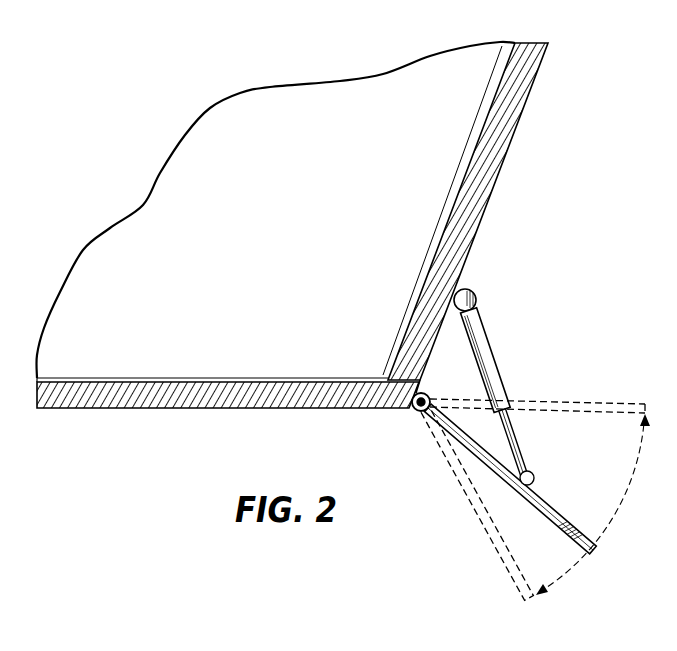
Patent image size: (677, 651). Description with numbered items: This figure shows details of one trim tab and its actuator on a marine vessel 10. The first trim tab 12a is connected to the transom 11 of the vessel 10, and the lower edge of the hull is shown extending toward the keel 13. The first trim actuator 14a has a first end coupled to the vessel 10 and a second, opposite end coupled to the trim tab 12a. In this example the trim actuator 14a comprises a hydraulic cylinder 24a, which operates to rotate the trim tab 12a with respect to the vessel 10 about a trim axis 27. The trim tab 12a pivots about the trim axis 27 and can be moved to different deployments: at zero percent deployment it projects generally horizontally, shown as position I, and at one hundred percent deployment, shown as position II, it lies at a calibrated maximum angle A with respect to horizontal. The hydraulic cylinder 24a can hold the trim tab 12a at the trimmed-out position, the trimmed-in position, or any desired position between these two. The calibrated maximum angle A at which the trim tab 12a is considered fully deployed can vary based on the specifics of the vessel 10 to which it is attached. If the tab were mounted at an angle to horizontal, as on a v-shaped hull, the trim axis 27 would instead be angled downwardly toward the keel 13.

The marine vessel 10 is at (160, 173).
The transom 11 is at (508, 152).
The keel 13 is at (115, 408).
The first trim actuator 14a is at (455, 356).
The hydraulic cylinder 24a is at (493, 348).
The trim axis 27 is at (414, 410).
The first trim tab 12a is at (547, 502).
The position I is at (571, 394).
The position II is at (480, 534).
The calibrated maximum angle A is at (617, 518).